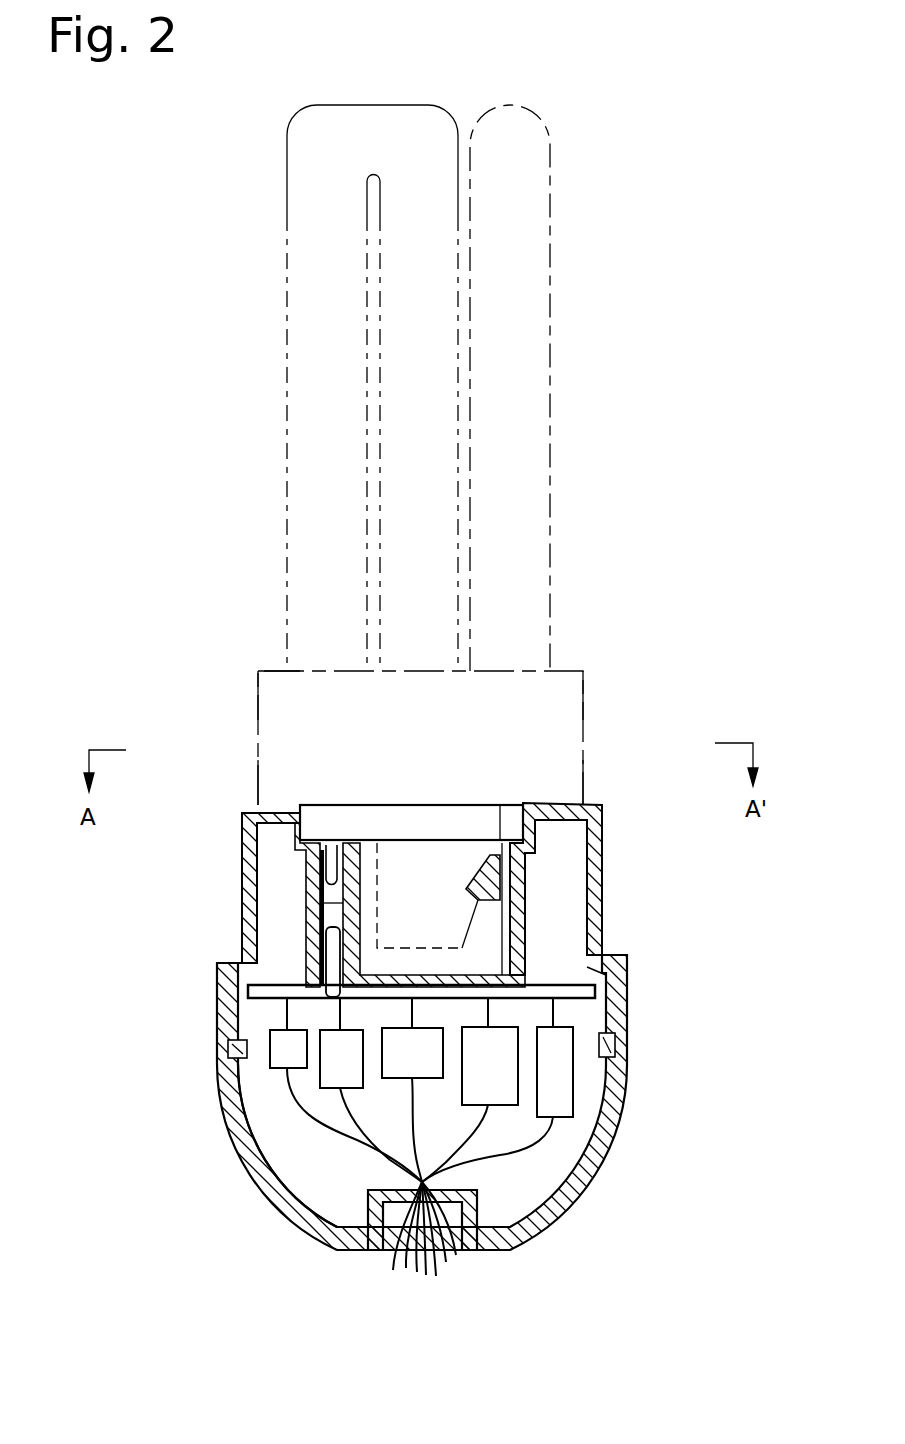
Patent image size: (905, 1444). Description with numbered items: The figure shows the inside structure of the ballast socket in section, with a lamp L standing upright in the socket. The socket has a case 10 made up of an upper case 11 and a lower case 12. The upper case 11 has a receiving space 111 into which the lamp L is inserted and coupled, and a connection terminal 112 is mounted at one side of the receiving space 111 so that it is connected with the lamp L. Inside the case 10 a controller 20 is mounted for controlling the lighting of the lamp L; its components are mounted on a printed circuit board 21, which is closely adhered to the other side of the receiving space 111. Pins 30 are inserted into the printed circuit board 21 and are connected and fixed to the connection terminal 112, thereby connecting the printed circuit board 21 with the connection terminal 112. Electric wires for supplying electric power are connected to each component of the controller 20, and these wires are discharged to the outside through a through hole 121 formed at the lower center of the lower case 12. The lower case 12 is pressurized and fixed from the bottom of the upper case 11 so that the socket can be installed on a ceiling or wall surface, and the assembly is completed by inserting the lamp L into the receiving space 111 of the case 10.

The lamp L is at (563, 692).
The case 10 is at (214, 1107).
The upper case 11 is at (254, 927).
The lower case 12 is at (262, 1183).
The controller 20 is at (577, 1015).
The printed circuit board 21 is at (598, 990).
The pins 30 is at (333, 968).
The receiving space 111 is at (477, 958).
The connection terminal 112 is at (333, 897).
The through hole 121 is at (458, 1247).